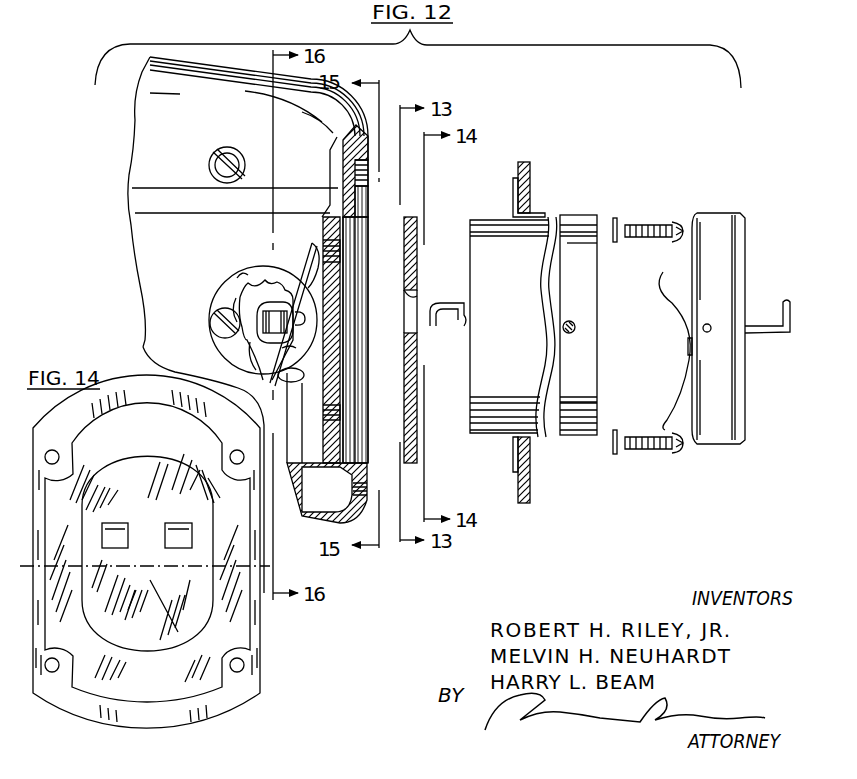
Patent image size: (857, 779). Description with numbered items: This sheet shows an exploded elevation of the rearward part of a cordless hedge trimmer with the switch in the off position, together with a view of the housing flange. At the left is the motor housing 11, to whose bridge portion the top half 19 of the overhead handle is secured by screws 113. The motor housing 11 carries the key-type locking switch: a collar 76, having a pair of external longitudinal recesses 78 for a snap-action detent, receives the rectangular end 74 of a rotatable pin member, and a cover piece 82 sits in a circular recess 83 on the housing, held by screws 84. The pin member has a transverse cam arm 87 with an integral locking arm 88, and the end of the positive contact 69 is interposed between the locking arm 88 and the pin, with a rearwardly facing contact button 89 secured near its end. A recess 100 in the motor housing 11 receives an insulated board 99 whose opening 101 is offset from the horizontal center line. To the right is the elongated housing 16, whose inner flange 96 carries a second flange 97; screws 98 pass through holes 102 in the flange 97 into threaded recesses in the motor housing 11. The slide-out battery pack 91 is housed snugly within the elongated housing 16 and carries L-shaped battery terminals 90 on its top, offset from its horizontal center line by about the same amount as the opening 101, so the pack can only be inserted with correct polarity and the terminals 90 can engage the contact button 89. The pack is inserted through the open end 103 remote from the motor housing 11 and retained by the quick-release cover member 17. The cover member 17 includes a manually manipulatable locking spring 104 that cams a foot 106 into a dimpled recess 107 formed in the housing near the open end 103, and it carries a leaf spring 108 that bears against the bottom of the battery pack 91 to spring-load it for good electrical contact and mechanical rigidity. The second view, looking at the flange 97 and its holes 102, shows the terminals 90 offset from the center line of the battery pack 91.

In FIG. 12, the motor housing 11 is at (150, 226).
In FIG. 12, the top half 19 is at (155, 133).
In FIG. 12, the screws 113 is at (212, 168).
In FIG. 12, the recess 100 is at (338, 215).
In FIG. 12, the collar 76 is at (244, 270).
In FIG. 12, the longitudinal recesses 78 is at (275, 284).
In FIG. 12, the positive contact 69 is at (314, 256).
In FIG. 12, the circular recess 83 is at (232, 278).
In FIG. 12, the cover piece 82 is at (212, 300).
In FIG. 12, the screws 84 is at (212, 331).
In FIG. 12, the end 74 is at (200, 366).
In FIG. 12, the contact buttons 89 is at (308, 318).
In FIG. 12, the transverse cam arm 87 is at (292, 350).
In FIG. 12, the locking arm 88 is at (304, 372).
In FIG. 12, the insulated board 99 is at (416, 380).
In FIG. 12, the opening 101 is at (450, 272).
In FIG. 12, the battery terminals 90 is at (448, 323).
In FIG. 14, the battery terminals 90 is at (118, 548).
In FIG. 12, the slide-out battery pack 91 is at (470, 400).
In FIG. 14, the slide-out battery pack 91 is at (180, 610).
In FIG. 12, the flange 96 is at (513, 192).
In FIG. 14, the flange 96 is at (205, 672).
In FIG. 12, the flange 97 is at (530, 172).
In FIG. 14, the flange 97 is at (190, 705).
In FIG. 12, the dimpled recess 107 is at (575, 330).
In FIG. 12, the open end 103 is at (597, 403).
In FIG. 12, the elongated housing 16 is at (586, 258).
In FIG. 12, the screws 98 is at (660, 200).
In FIG. 12, the cover member 17 is at (708, 240).
In FIG. 12, the locking spring 104 is at (783, 334).
In FIG. 12, the foot 106 is at (703, 328).
In FIG. 12, the leaf spring 108 is at (672, 398).
In FIG. 14, the holes 102 is at (245, 665).